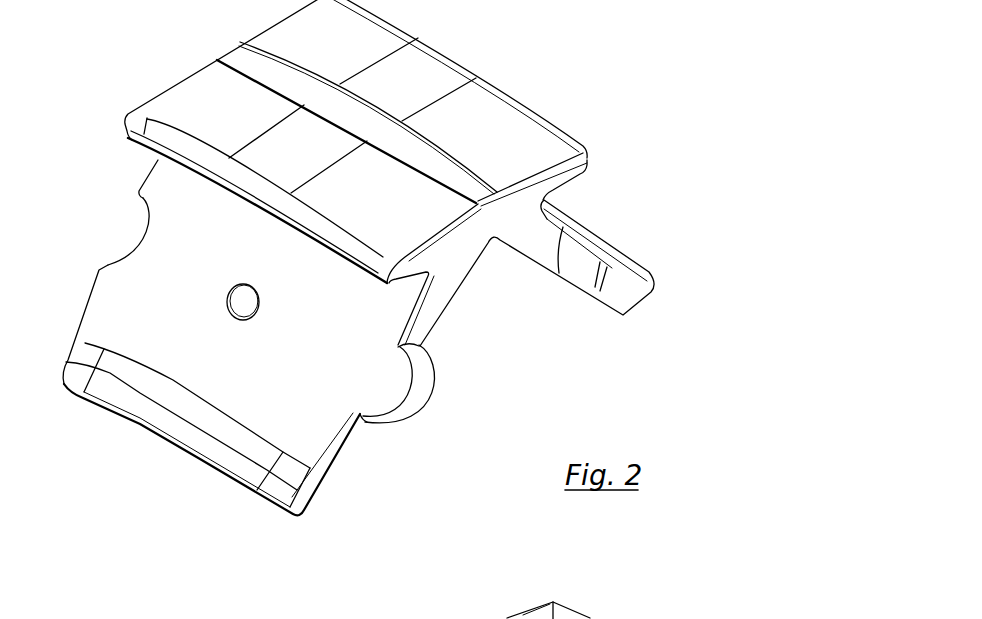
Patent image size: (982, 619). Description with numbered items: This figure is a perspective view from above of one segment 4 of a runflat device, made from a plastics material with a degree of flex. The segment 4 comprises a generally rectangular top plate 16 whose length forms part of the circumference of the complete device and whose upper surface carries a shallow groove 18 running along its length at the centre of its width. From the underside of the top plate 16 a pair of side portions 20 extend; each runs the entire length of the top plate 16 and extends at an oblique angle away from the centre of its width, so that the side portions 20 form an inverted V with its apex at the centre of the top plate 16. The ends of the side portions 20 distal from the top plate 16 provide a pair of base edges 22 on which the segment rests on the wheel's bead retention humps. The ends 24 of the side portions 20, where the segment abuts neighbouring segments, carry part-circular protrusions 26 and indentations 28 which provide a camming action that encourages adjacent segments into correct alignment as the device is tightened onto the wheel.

The segment 4 is at (362, 282).
The top plate 16 is at (435, 79).
The groove 18 is at (245, 62).
The side portions 20 is at (303, 401).
The base edges 22 is at (226, 468).
The ends 24 is at (358, 351).
The part-circular protrusions 26 is at (414, 406).
The indentations 28 is at (134, 231).